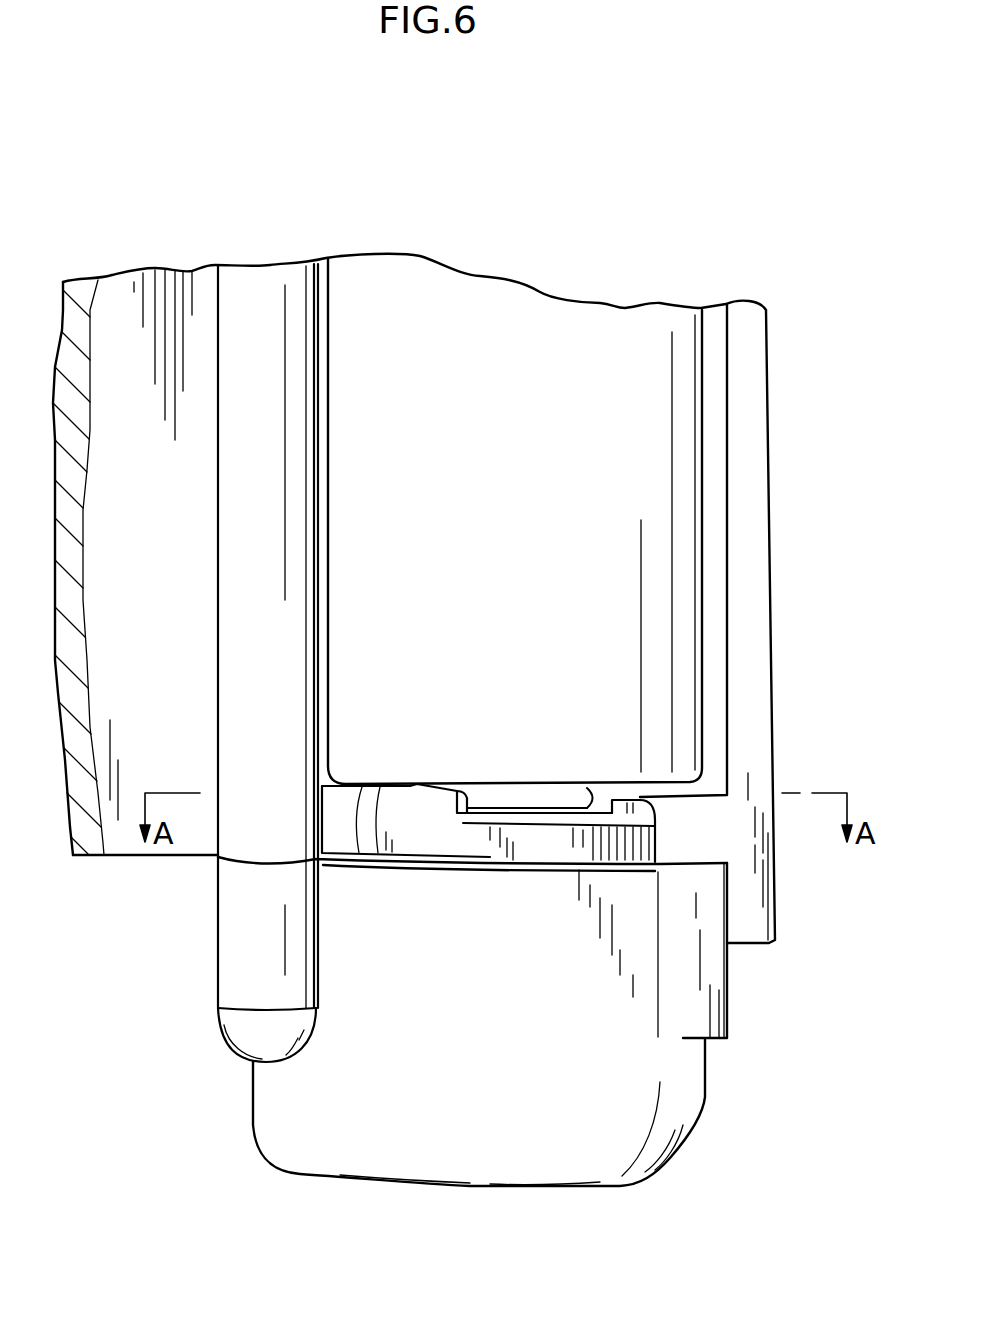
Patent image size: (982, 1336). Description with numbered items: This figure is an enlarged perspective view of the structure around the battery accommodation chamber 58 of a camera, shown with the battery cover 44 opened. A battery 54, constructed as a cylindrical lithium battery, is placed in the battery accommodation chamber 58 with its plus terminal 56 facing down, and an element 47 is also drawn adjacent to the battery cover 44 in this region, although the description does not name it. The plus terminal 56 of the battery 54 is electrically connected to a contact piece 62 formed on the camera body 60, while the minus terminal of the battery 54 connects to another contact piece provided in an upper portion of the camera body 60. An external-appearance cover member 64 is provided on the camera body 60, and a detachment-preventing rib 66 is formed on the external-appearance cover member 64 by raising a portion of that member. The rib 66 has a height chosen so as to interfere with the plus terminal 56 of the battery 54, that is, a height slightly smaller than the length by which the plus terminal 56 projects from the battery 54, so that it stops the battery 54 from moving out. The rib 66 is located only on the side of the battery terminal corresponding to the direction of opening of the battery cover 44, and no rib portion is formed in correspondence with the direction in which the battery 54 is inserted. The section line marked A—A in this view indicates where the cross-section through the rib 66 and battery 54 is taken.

The battery cover 44 is at (122, 303).
The pin 47 is at (270, 273).
The battery 54 is at (355, 627).
The plus terminal 56 is at (538, 790).
The battery accommodation chamber 58 is at (692, 501).
The camera body 60 is at (715, 750).
The contact piece 62 is at (520, 820).
The external-appearance cover member 64 is at (648, 1060).
The detachment-preventing rib 66 is at (400, 808).